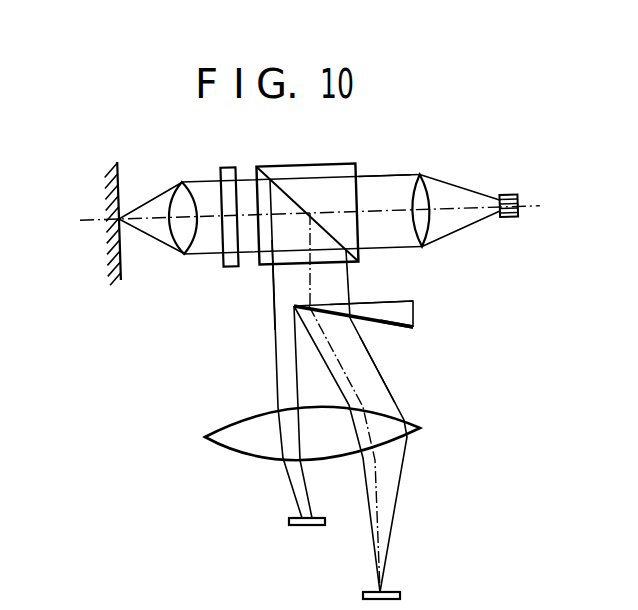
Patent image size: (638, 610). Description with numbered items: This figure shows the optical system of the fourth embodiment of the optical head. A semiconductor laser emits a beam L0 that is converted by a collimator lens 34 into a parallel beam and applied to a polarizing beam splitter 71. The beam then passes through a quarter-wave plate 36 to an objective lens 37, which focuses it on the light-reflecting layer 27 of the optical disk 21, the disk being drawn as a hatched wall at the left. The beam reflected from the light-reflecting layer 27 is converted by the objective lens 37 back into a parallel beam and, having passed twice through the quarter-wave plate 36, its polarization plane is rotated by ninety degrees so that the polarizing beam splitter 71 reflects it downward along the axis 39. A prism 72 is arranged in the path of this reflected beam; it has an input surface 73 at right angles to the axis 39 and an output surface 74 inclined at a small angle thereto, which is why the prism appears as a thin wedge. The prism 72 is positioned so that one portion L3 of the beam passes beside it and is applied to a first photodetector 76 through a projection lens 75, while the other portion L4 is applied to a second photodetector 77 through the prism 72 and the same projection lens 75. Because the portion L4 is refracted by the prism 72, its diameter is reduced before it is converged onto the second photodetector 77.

The optical disk 21 is at (95, 272).
The light-reflecting layer 27 is at (120, 267).
The objective lens 37 is at (172, 196).
The quarter-wave plate 36 is at (229, 170).
The polarizing beam splitter 71 is at (319, 164).
The light beam L0 is at (389, 176).
The collimator lens 34 is at (423, 175).
The optical axis 39 is at (508, 195).
The prism 72 is at (449, 291).
The input surface 73 is at (391, 302).
The output surface 74 is at (413, 328).
The beam portion L3 is at (276, 388).
The beam portion L4 is at (404, 407).
The projection lens 75 is at (225, 445).
The first photodetector 76 is at (296, 526).
The second photodetector 77 is at (401, 595).